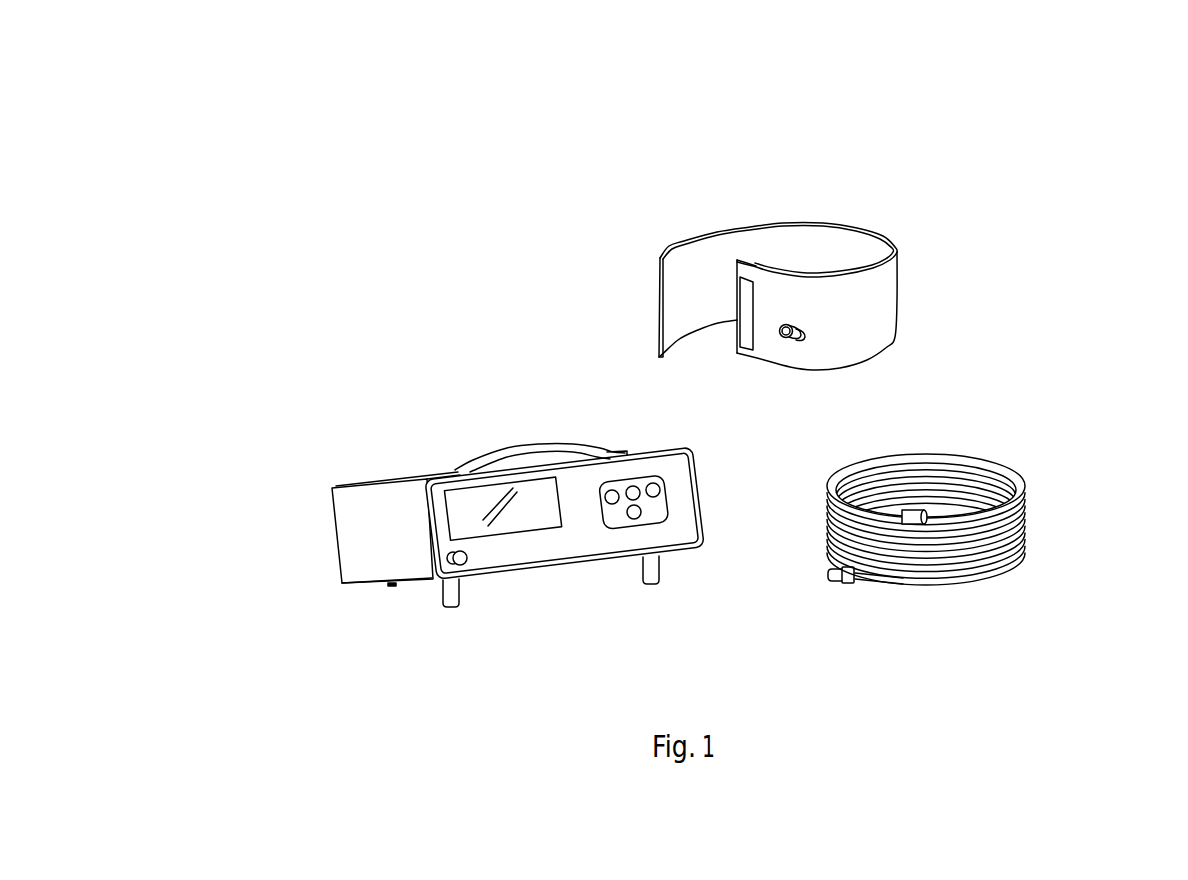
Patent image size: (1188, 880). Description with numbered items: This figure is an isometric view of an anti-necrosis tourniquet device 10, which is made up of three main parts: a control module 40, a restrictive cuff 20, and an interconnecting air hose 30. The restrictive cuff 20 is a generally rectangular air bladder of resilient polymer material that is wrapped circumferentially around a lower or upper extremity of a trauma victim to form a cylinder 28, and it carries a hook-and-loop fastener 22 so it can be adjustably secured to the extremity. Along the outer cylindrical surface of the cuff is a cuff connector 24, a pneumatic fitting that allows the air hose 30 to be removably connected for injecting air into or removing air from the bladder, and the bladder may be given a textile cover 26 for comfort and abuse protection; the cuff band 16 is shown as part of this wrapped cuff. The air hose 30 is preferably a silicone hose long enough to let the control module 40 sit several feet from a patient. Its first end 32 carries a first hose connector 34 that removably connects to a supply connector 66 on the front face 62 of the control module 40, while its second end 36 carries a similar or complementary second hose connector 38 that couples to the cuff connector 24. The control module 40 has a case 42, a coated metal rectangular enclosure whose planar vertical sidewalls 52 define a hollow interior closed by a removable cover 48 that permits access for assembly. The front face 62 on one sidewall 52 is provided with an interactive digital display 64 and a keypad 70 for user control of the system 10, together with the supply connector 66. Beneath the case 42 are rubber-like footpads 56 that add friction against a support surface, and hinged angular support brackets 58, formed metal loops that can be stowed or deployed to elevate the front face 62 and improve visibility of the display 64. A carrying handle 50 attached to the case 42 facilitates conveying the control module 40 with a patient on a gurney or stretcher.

The anti-necrosis tourniquet device 10 is at (412, 190).
The cuff band 16 is at (690, 238).
The restrictive cuff 20 is at (914, 255).
The hook-and-loop fastener 22 is at (748, 352).
The cuff connector 24 is at (800, 338).
The textile cover 26 is at (878, 292).
The cylinder 28 is at (810, 222).
The air hose 30 is at (1038, 479).
The first end 32 is at (875, 580).
The first hose connector 34 is at (842, 583).
The second end 36 is at (897, 513).
The second hose connector 38 is at (921, 523).
The control module 40 is at (333, 469).
The case 42 is at (418, 581).
The removable cover 48 is at (424, 478).
The carrying handle 50 is at (558, 447).
The sidewall 52 is at (352, 523).
The footpad 56 is at (392, 586).
The angular support bracket 58 is at (460, 607).
The front face 62 is at (548, 543).
The display 64 is at (522, 487).
The supply connector 66 is at (468, 563).
The keypad 70 is at (667, 491).